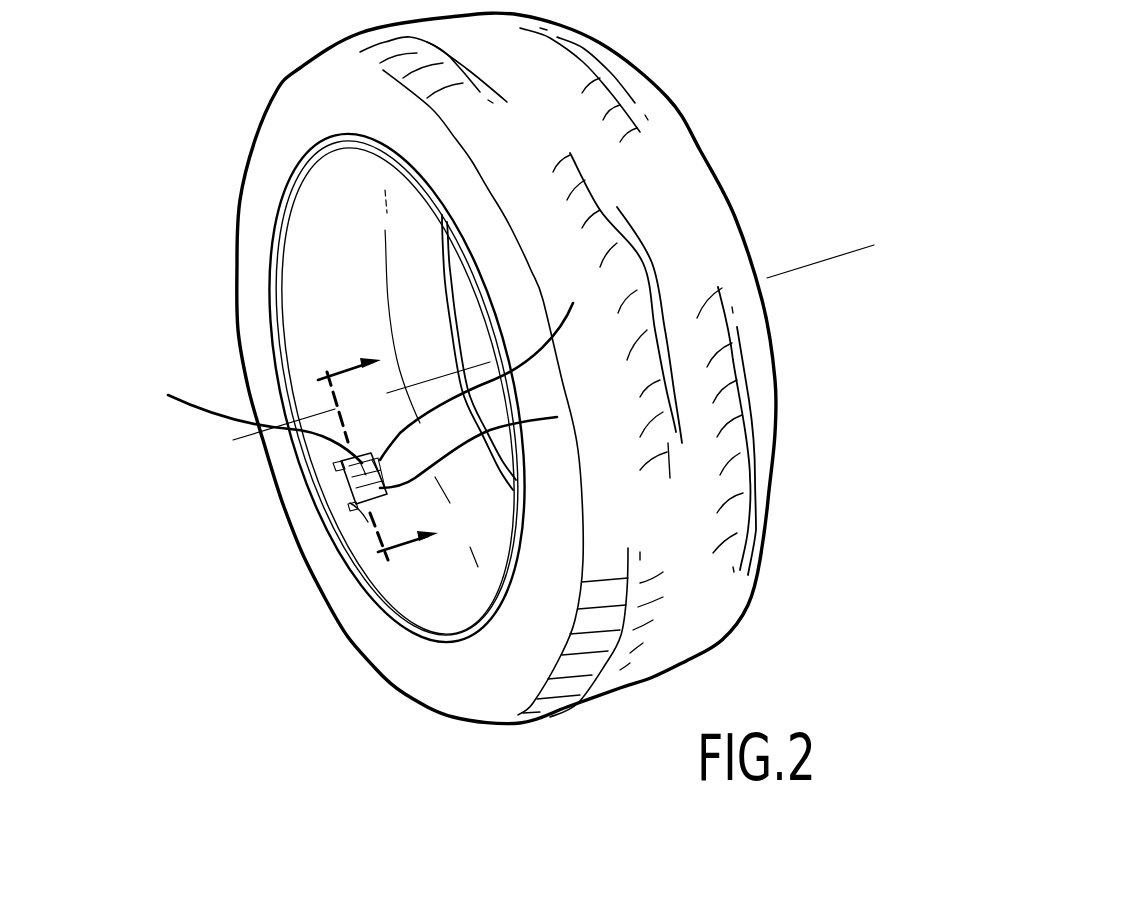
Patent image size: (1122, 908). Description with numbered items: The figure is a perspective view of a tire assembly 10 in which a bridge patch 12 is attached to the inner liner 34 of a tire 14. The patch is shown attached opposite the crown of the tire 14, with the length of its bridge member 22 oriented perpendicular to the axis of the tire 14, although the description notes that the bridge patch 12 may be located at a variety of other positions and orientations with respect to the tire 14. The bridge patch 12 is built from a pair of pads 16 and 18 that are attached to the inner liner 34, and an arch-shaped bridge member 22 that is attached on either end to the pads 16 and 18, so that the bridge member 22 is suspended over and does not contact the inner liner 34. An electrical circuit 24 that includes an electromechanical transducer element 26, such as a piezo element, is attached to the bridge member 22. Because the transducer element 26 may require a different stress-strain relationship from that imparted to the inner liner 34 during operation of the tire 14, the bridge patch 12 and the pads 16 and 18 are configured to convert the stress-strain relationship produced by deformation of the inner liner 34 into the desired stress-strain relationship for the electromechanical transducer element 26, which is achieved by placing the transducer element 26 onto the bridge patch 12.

The tire assembly 10 is at (158, 196).
The bridge patch 12 is at (324, 503).
The tire 14 is at (682, 177).
The pad 16 is at (340, 462).
The pad 18 is at (357, 517).
The bridge member 22 is at (485, 444).
The electrical circuit 24 is at (247, 417).
The electromechanical transducer element 26 is at (485, 362).
The inner liner 34 is at (314, 275).